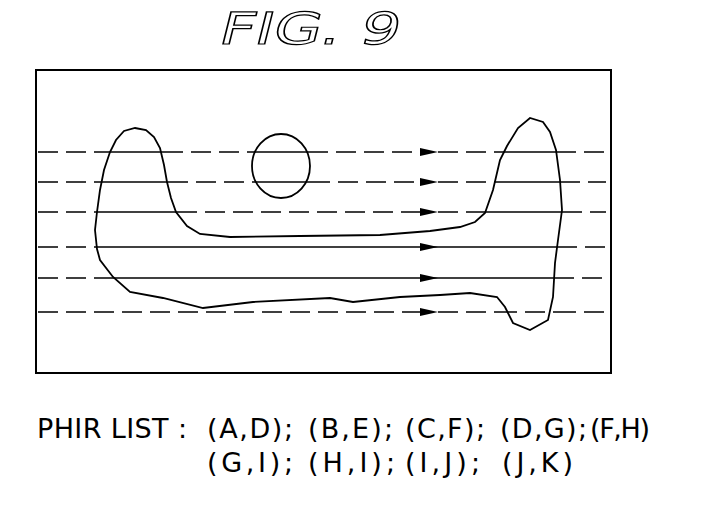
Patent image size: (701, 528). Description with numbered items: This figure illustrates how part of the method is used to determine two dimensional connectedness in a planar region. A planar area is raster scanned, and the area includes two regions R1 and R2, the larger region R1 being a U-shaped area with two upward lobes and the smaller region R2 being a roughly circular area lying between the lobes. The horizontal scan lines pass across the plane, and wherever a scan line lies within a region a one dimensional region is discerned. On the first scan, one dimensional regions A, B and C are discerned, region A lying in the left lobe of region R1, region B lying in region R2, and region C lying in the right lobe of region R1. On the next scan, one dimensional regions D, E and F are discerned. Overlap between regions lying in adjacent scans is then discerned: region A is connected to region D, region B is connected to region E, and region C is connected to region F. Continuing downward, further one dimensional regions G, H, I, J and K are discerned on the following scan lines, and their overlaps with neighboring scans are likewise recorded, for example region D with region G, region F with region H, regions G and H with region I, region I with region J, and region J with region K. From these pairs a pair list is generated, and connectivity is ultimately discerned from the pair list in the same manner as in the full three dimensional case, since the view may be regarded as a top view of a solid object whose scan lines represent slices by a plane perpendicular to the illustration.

The region R1 is at (157, 143).
The region R2 is at (298, 147).
The one dimensional region A is at (138, 142).
The one dimensional region B is at (281, 147).
The one dimensional region C is at (532, 139).
The one dimensional region D is at (135, 171).
The one dimensional region E is at (281, 172).
The one dimensional region F is at (527, 170).
The one dimensional region G is at (136, 201).
The one dimensional region H is at (523, 200).
The one dimensional region I is at (326, 236).
The one dimensional region J is at (333, 267).
The one dimensional region K is at (526, 300).